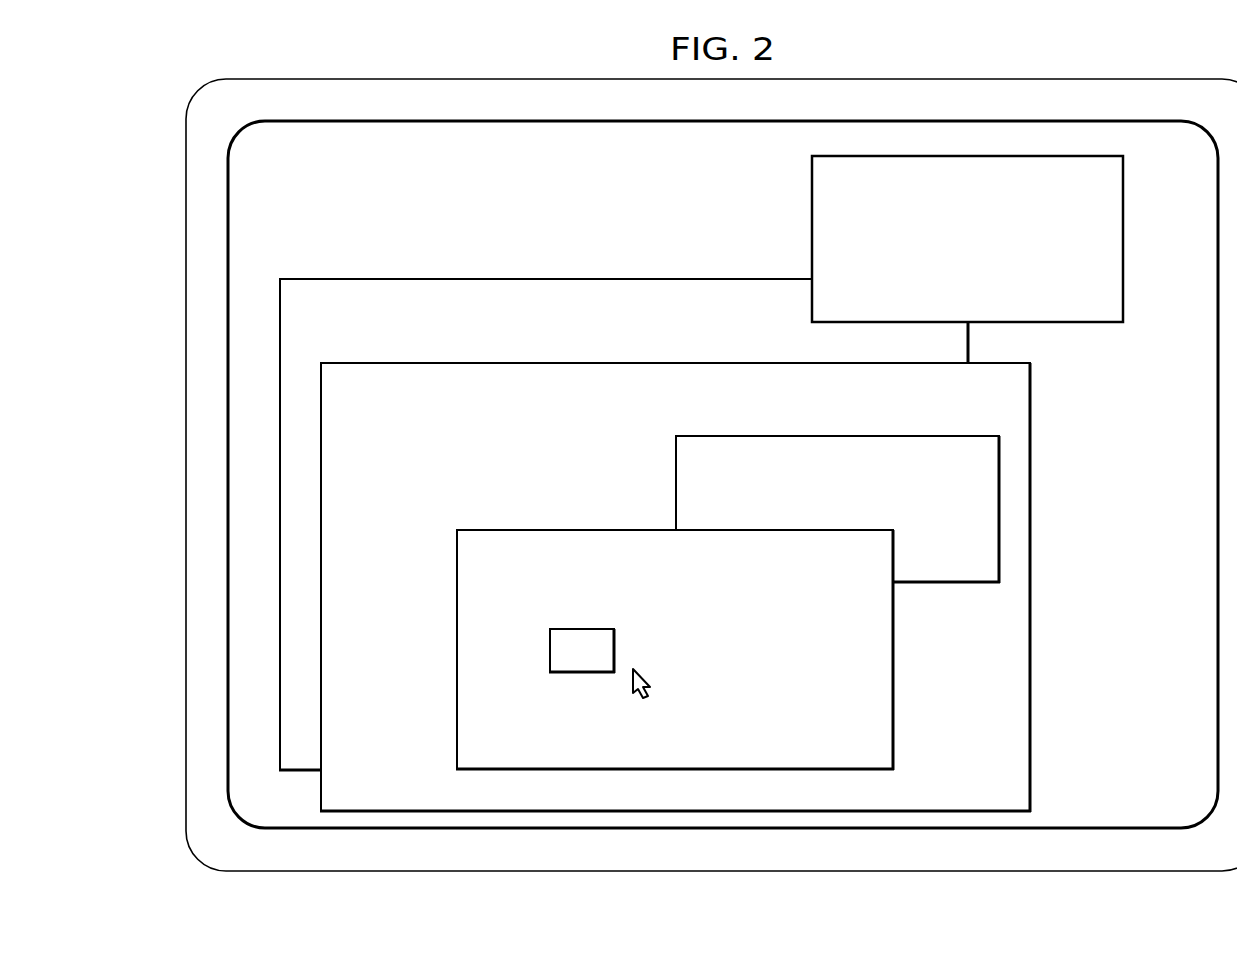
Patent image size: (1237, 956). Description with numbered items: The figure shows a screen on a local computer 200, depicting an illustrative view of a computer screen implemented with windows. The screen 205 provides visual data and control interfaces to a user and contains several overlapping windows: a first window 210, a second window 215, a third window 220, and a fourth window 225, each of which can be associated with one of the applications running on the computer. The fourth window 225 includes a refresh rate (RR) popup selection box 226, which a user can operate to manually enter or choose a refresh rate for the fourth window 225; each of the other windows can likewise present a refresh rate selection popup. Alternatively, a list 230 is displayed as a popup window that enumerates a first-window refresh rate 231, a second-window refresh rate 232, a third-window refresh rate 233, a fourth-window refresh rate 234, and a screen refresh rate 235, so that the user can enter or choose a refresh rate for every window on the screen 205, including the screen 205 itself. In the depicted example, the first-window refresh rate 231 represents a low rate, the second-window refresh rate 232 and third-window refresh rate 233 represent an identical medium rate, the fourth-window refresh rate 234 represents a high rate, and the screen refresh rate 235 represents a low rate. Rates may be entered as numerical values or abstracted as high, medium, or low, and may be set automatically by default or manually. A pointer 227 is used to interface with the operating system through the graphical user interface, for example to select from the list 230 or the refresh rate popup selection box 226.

The local computer 200 is at (516, 67).
The screen 205 is at (508, 234).
The window 1 210 is at (654, 279).
The window 2 215 is at (738, 362).
The window 3 220 is at (838, 435).
The window 4 225 is at (572, 529).
The refresh rate (RR) popup selection box 226 is at (582, 673).
The pointer 227 is at (645, 676).
The list 230 is at (967, 239).
The window 1 refresh rate 231 is at (1112, 201).
The window 2 refresh rate 232 is at (1112, 228).
The window 3 refresh rate 233 is at (1112, 255).
The window 4 refresh rate 234 is at (1112, 281).
The screen refresh rate 235 is at (1112, 307).